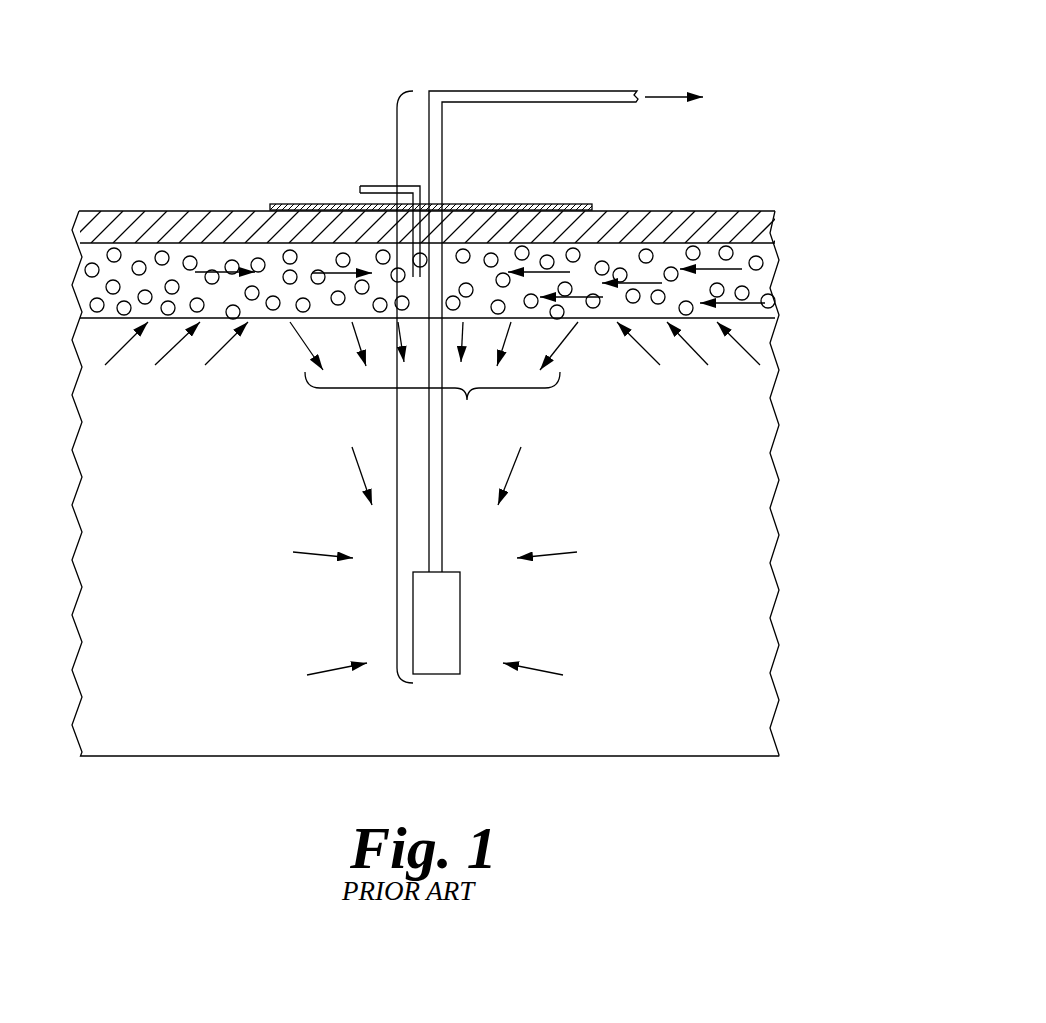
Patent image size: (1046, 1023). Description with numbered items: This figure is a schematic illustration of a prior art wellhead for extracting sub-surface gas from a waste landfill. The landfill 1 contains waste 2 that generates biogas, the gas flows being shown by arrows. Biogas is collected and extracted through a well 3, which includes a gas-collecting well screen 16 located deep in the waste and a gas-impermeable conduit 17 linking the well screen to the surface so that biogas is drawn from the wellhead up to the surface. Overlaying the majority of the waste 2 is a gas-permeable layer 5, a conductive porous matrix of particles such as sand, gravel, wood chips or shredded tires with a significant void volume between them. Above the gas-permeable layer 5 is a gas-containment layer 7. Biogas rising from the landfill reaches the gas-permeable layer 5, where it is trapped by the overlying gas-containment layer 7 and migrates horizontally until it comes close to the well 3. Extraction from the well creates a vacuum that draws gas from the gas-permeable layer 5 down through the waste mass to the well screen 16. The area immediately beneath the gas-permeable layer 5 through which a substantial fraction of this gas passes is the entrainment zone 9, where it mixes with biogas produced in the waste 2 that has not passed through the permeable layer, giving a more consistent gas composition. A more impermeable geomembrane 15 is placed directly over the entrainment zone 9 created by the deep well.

The landfill 1 is at (799, 270).
The waste 2 is at (208, 512).
The well 3 is at (397, 426).
The gas-permeable layer 5 is at (78, 293).
The gas-containment layer 7 is at (662, 225).
The entrainment zone 9 is at (432, 308).
The geomembrane 15 is at (520, 204).
The gas-collecting well screen 16 is at (460, 614).
The gas-impermeable conduit 17 is at (564, 90).